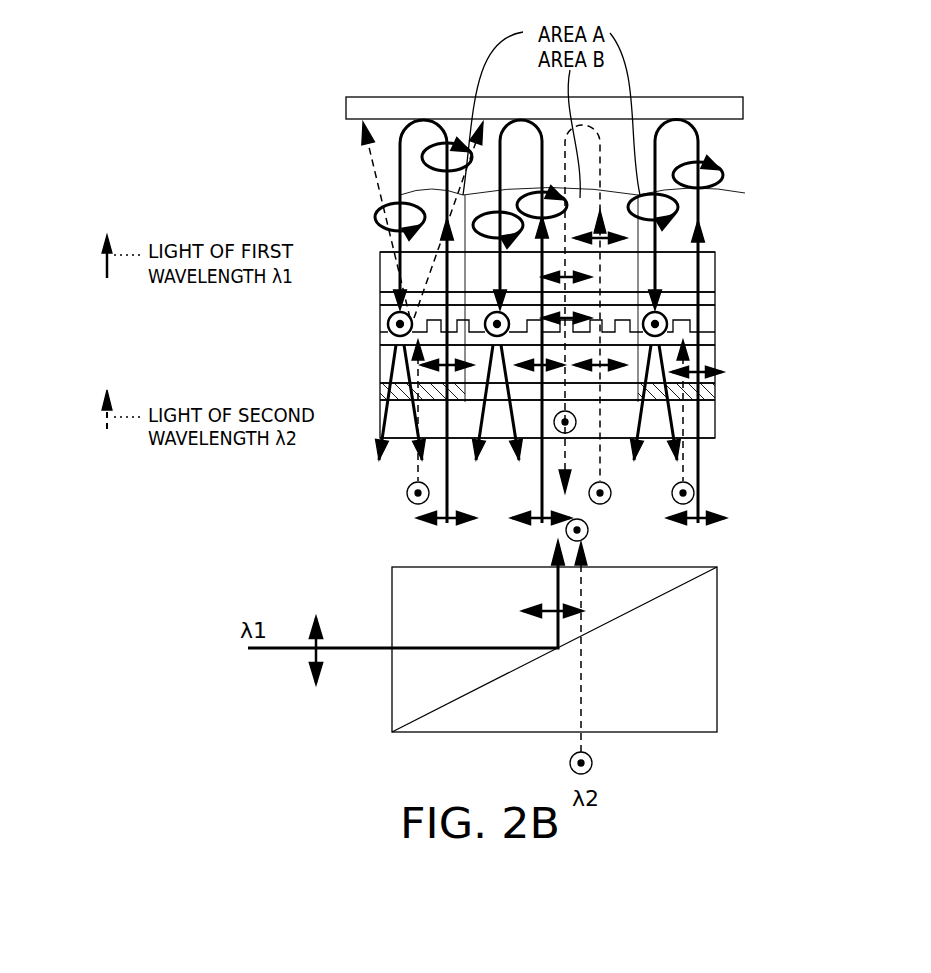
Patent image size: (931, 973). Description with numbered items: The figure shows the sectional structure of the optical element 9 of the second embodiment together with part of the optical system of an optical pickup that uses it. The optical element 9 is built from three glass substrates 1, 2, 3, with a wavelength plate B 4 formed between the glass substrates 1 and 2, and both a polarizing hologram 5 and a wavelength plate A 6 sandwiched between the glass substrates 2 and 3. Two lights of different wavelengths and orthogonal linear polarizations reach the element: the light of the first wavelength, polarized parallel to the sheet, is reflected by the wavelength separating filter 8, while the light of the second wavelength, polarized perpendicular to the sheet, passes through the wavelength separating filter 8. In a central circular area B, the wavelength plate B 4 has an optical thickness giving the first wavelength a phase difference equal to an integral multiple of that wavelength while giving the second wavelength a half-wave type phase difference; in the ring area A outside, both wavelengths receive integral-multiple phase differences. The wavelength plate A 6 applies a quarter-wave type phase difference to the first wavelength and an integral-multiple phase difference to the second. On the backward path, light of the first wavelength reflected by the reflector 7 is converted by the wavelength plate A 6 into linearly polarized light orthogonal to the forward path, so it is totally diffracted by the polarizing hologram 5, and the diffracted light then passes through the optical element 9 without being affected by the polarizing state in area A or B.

The glass substrate 1 is at (712, 425).
The glass substrate 2 is at (712, 358).
The glass substrate 3 is at (712, 268).
The wavelength plate B 4 is at (712, 390).
The polarizing hologram 5 is at (722, 307).
The wavelength plate A 6 is at (712, 300).
The reflector 7 is at (743, 97).
The wavelength separating filter 8 is at (665, 592).
The optical element 9 is at (790, 252).